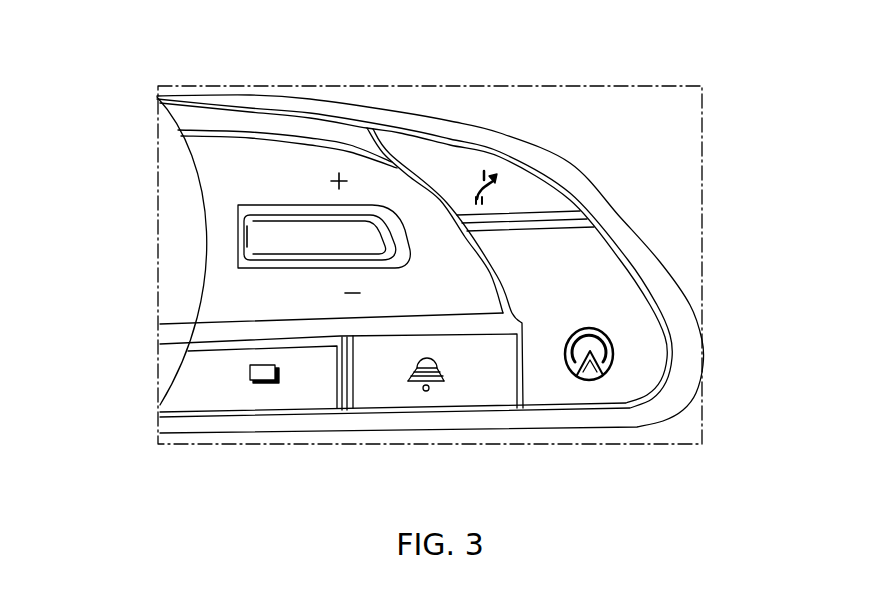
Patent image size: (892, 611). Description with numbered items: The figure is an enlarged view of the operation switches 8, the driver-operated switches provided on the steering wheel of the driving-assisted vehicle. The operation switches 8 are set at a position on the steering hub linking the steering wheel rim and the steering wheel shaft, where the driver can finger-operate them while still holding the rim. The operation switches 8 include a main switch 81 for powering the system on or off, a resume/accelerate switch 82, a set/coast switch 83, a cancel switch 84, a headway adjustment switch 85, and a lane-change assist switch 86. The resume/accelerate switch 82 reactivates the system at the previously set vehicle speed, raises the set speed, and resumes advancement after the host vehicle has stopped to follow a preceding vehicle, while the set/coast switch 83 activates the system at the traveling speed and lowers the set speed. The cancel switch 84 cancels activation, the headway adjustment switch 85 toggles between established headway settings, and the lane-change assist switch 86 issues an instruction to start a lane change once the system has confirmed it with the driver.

The operation switches 8 is at (426, 37).
The main switch 81 is at (605, 292).
The resume/accelerate switch 82 is at (243, 168).
The set/coast switch 83 is at (260, 300).
The cancel switch 84 is at (263, 238).
The headway adjustment switch 85 is at (478, 382).
The lane-change assist switch 86 is at (522, 192).